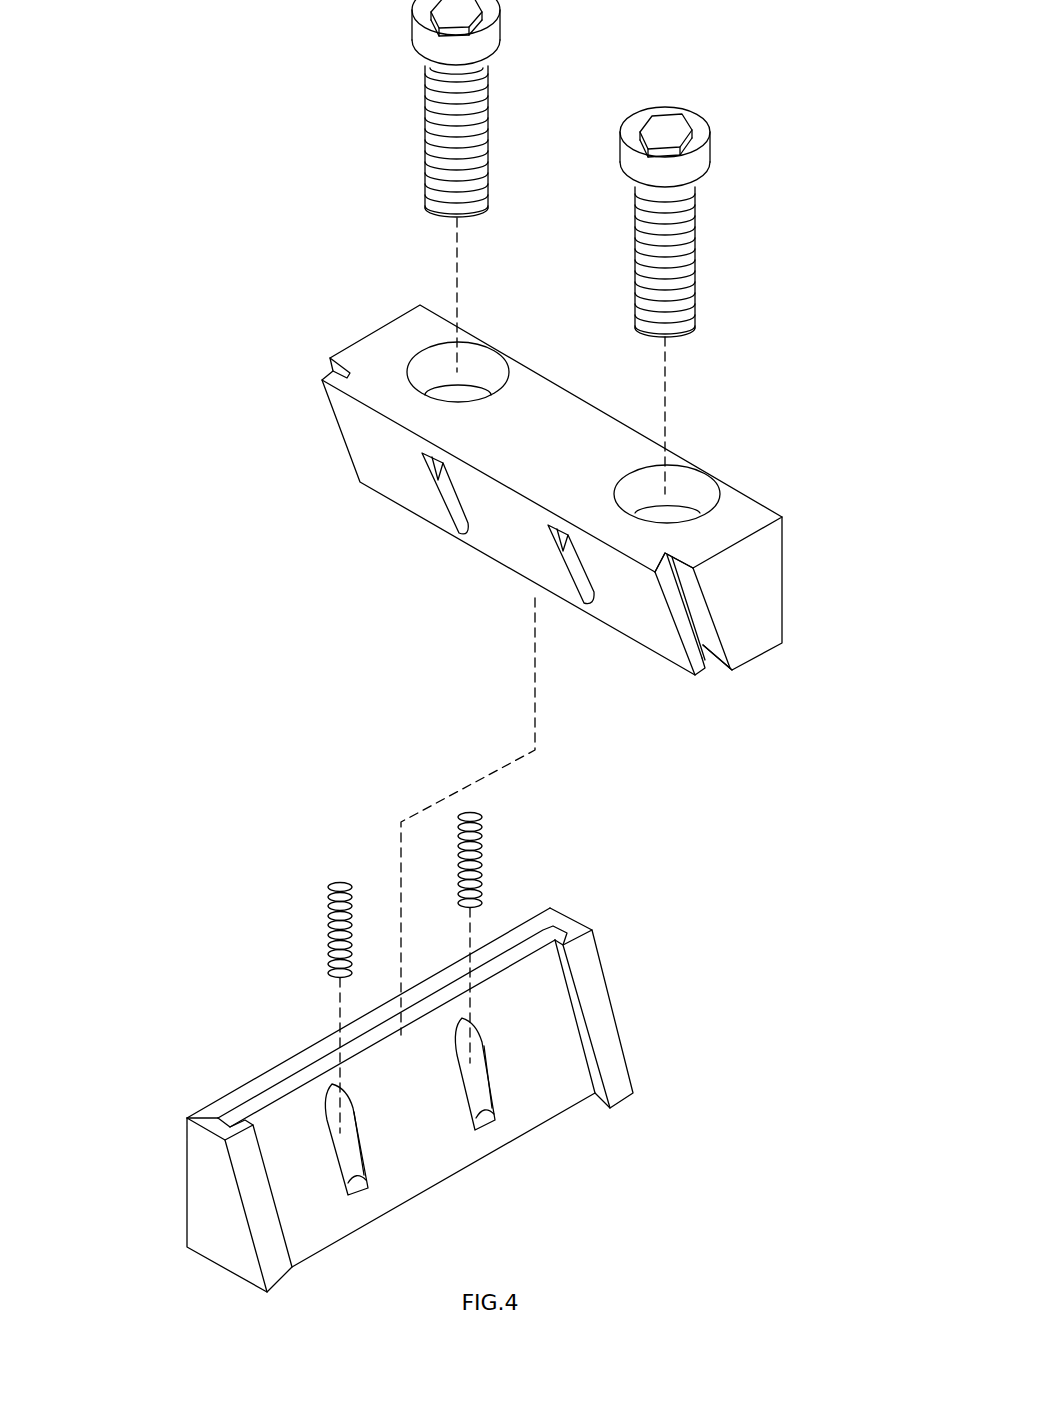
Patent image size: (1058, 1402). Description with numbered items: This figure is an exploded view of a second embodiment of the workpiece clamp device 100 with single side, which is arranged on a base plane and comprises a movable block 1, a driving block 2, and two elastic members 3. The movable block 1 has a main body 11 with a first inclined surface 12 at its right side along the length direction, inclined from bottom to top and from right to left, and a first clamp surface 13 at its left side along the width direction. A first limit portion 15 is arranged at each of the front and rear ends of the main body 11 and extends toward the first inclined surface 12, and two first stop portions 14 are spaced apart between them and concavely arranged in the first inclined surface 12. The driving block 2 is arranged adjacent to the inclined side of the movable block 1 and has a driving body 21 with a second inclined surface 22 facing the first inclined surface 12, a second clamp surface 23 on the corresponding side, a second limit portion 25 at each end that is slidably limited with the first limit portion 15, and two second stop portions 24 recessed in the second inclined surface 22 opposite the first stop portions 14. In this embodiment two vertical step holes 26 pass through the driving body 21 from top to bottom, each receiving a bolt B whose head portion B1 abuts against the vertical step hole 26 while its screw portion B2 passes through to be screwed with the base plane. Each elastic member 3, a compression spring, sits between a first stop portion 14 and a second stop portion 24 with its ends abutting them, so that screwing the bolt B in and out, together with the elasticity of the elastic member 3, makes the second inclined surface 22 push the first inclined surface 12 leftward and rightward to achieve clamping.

The workpiece clamp device with single side 100 is at (275, 267).
The movable block 1 is at (672, 1144).
The main body 11 is at (270, 1077).
The first inclined surface 12 is at (422, 1138).
The first clamp surface 13 is at (213, 1092).
The first stop portion 14 is at (358, 1195).
The first limit portion 15 is at (598, 1013).
The driving block 2 is at (796, 471).
The driving body 21 is at (743, 518).
The second inclined surface 22 is at (512, 553).
The second clamp surface 23 is at (572, 393).
The second stop portion 24 is at (457, 507).
The second limit portion 25 is at (328, 364).
The vertical step hole 26 is at (428, 358).
The elastic member 3 is at (496, 853).
The bolt B is at (372, 119).
The head portion B1 is at (492, 43).
The screw portion B2 is at (482, 180).